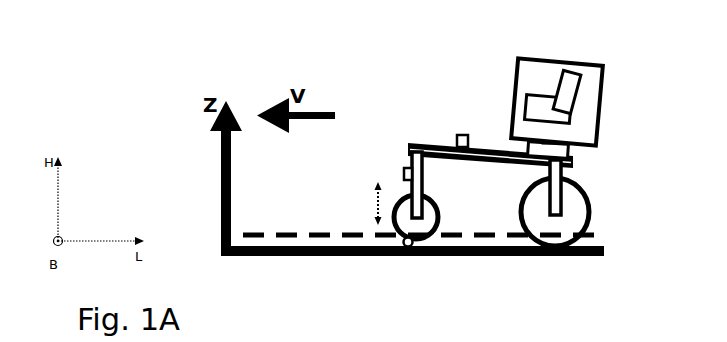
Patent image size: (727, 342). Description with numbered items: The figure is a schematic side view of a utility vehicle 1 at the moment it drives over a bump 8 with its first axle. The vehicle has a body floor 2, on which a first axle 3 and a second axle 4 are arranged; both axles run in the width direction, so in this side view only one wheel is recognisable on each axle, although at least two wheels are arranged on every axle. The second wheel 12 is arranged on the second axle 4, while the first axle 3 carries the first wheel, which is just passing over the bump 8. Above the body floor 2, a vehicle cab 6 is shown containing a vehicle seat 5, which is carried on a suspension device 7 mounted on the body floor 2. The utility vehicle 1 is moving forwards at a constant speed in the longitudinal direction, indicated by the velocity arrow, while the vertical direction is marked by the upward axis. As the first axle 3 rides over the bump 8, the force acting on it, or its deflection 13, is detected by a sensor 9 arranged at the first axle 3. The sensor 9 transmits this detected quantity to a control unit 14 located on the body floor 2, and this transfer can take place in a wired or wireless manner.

The utility vehicle 1 is at (463, 35).
The body floor 2 is at (425, 143).
The first axle 3 is at (399, 239).
The second axle 4 is at (562, 214).
The vehicle seat 5 is at (577, 108).
The vehicle cab 6 is at (602, 80).
The suspension device 7 is at (562, 130).
The bump 8 is at (408, 248).
The sensor 9 is at (404, 173).
The second wheel 12 is at (582, 205).
The deflection 13 is at (375, 205).
The control unit 14 is at (462, 135).